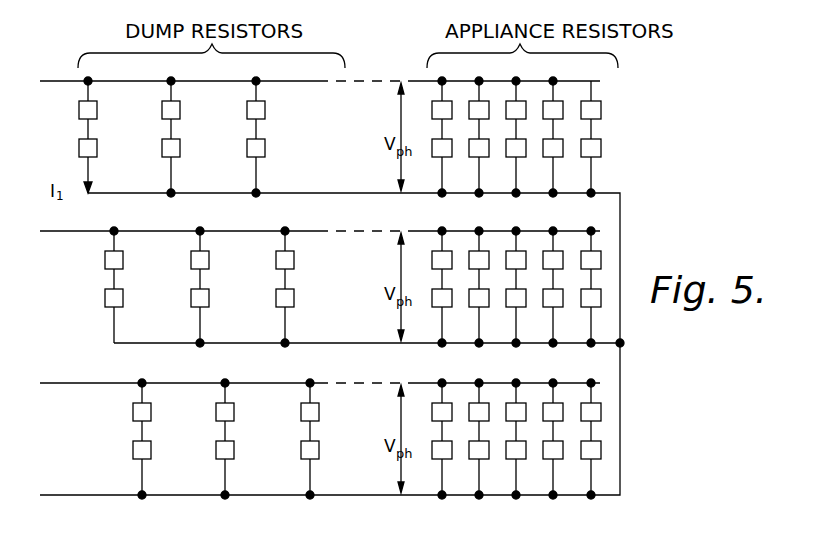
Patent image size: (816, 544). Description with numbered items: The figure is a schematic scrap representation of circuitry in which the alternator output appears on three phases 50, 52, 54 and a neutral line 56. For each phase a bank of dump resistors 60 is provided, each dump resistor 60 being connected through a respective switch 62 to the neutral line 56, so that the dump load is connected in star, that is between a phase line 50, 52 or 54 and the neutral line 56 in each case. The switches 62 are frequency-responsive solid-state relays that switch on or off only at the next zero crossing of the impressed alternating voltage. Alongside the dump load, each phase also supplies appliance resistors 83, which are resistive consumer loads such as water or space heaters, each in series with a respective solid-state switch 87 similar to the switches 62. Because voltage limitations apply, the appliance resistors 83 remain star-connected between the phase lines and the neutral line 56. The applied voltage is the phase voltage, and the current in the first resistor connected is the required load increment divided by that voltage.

The phase line 50 is at (56, 81).
The phase line 52 is at (68, 231).
The phase line 54 is at (77, 383).
The neutral line 56 is at (326, 193).
The dump resistor 60 is at (162, 145).
The switch 62 is at (162, 107).
The appliance resistor 83 is at (478, 157).
The solid-state switch 87 is at (472, 102).